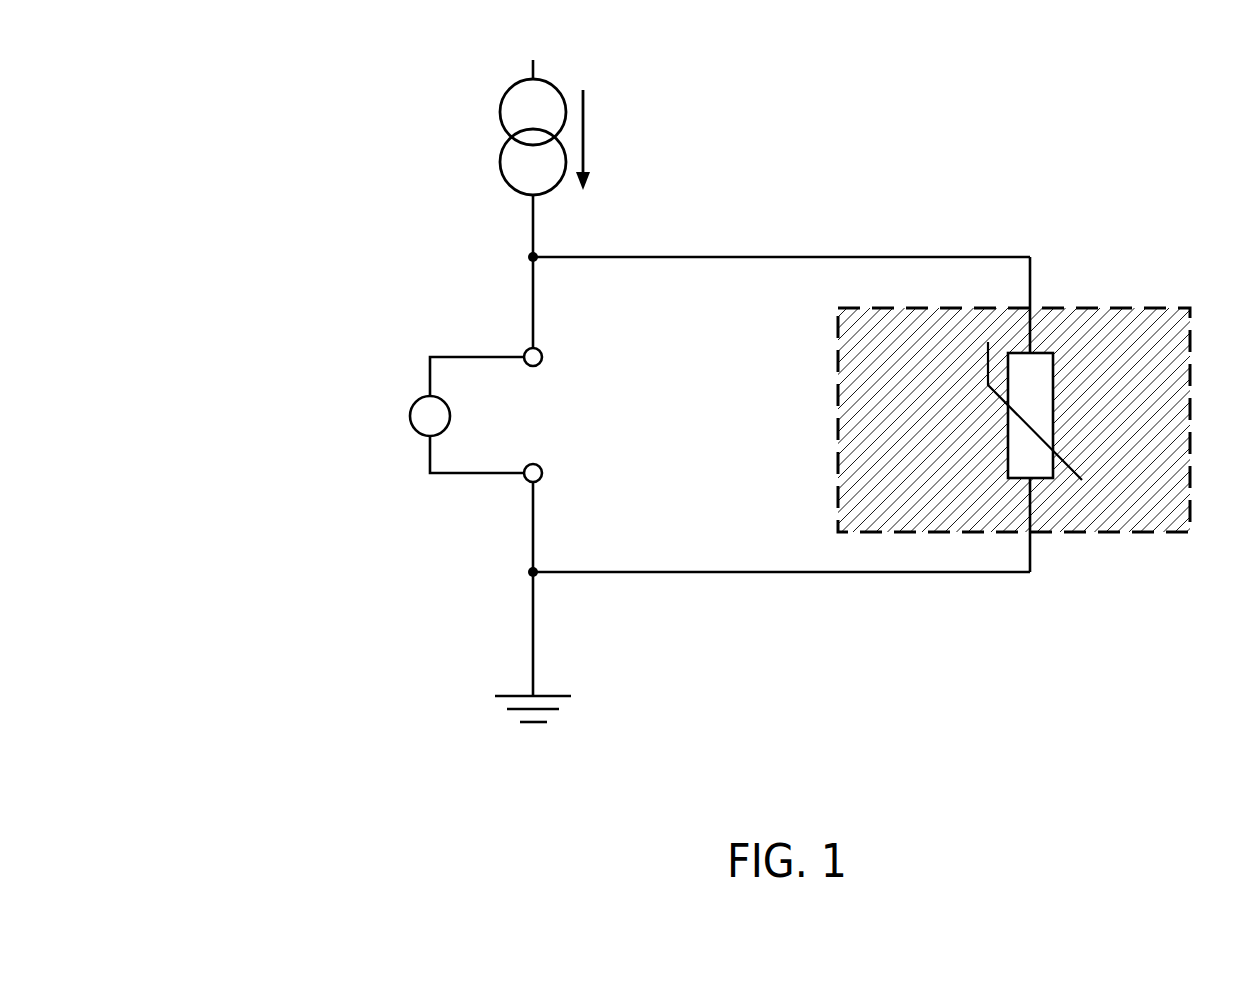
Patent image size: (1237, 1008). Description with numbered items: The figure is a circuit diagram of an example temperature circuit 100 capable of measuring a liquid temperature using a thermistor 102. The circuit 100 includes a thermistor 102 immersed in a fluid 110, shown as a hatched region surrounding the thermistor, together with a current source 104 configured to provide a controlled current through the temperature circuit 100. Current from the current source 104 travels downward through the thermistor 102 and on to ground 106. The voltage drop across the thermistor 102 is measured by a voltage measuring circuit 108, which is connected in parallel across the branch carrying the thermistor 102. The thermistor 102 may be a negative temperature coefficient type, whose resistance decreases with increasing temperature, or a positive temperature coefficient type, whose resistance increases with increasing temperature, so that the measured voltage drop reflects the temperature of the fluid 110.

The temperature circuit 100 is at (338, 128).
The thermistor 102 is at (1048, 478).
The current source 104 is at (498, 160).
The ground 106 is at (571, 696).
The voltage measuring circuit 108 is at (412, 415).
The fluid 110 is at (1105, 308).